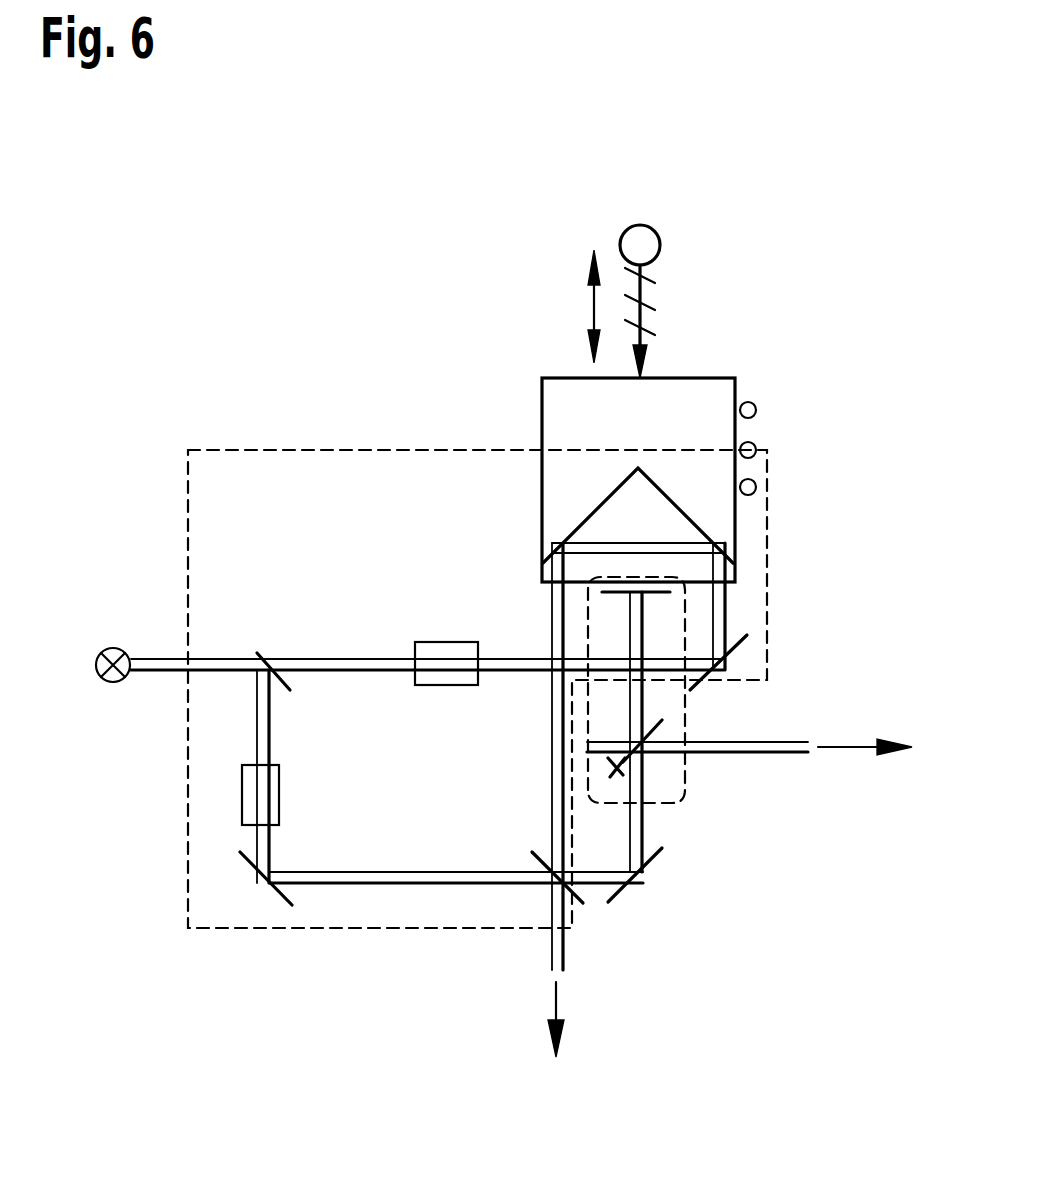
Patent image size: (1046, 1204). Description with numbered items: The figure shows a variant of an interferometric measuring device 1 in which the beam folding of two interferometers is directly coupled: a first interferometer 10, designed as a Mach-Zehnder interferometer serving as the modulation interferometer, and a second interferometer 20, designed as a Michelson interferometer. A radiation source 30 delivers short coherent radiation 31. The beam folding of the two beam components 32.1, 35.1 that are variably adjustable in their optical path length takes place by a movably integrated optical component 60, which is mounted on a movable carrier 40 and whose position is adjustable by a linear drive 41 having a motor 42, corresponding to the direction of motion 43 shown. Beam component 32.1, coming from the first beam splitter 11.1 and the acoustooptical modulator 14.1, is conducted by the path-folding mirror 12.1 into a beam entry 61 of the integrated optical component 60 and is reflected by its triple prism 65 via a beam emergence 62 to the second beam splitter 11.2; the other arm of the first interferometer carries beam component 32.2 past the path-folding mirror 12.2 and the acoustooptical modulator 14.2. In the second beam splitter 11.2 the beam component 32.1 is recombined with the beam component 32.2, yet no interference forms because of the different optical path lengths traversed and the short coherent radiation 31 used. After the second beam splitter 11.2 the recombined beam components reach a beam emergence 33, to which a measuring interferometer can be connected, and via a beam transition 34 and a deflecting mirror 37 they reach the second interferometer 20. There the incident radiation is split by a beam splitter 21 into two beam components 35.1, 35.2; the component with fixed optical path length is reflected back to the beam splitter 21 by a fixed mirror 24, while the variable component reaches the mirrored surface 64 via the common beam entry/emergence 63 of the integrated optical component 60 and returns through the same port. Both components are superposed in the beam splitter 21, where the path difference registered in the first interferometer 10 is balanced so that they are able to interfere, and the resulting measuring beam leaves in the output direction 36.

The interferometric measuring device 1 is at (360, 328).
The first interferometer 10 is at (220, 450).
The radiation source 30 is at (110, 647).
The short coherent radiation 31 is at (157, 657).
The first beam splitter 11.1 is at (250, 645).
The beam component 32.2 is at (258, 745).
The acoustooptical modulator 14.2 is at (250, 798).
The path-folding mirror 12.2 is at (245, 863).
The beam component 32.1 is at (500, 665).
The acoustooptical modulator 14.1 is at (438, 648).
The beam emergence 62 is at (555, 610).
The second beam splitter 11.2 is at (542, 880).
The beam emergence 33 is at (556, 1005).
The beam transition 34 is at (593, 883).
The deflecting mirror 37 is at (650, 865).
The fixed mirror 24 is at (587, 765).
The beam component 35.2 is at (625, 775).
The beam component 35.1 is at (647, 703).
The beam splitter 21 is at (647, 747).
The second interferometer 20 is at (690, 725).
The measuring beam direction 36 is at (855, 743).
The path-folding mirror 12.1 is at (738, 647).
The common beam entry/emergence 63 is at (728, 617).
The beam entry 61 is at (717, 603).
The mirrored surface 64 is at (675, 577).
The movable carrier 40 is at (540, 408).
The movable integrated optical component 60 is at (572, 568).
The triple prism 65 is at (650, 530).
The direction of motion 43 is at (592, 297).
The motor 42 is at (645, 223).
The linear drive 41 is at (647, 297).